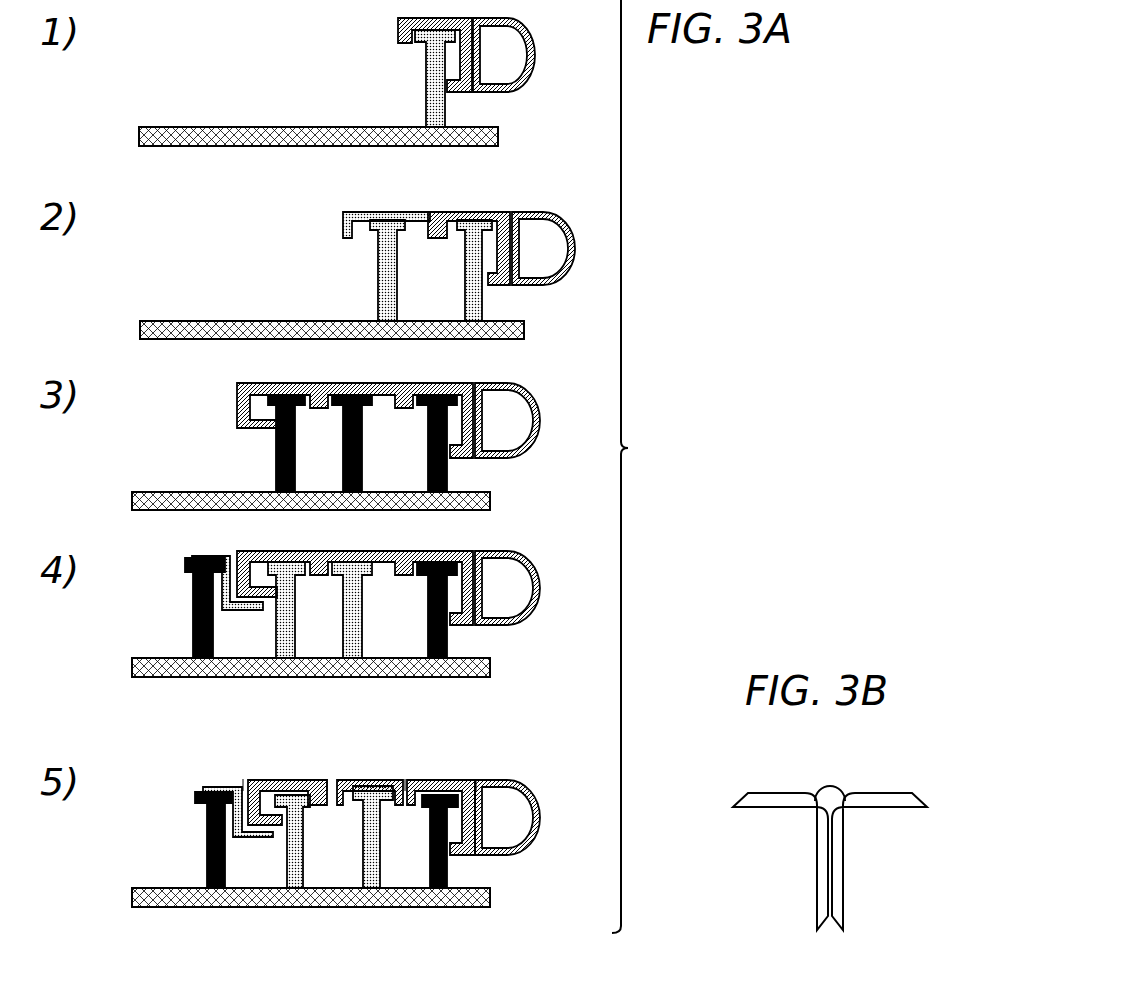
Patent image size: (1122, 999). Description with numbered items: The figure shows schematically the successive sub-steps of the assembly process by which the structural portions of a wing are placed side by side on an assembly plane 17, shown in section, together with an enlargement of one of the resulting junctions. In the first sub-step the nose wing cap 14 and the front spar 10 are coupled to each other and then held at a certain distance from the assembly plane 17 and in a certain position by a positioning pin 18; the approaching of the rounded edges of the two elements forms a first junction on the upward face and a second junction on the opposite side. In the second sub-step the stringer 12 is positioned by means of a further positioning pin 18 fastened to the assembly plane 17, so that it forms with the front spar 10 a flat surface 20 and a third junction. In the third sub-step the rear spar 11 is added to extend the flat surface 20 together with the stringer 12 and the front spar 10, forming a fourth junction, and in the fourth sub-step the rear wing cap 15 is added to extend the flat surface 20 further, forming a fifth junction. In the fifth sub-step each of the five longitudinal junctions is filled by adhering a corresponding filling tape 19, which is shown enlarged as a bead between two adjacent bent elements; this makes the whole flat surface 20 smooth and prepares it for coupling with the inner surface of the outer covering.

In FIG. 3A, the front spar 10 is at (396, 35).
In FIG. 3A, the rear spar 11 is at (237, 408).
In FIG. 3A, the stringer 12 is at (343, 220).
In FIG. 3A, the nose wing cap 14 is at (535, 52).
In FIG. 3A, the rear wing cap 15 is at (243, 610).
In FIG. 3A, the assembly plane 17 is at (172, 127).
In FIG. 3A, the positioning pin 18 is at (426, 88).
In FIG. 3A, the filling tape 19 is at (327, 776).
In FIG. 3B, the filling tape 19 is at (828, 793).
In FIG. 3A, the flat surface 20 is at (362, 780).
In FIG. 3B, the flat surface 20 is at (905, 793).